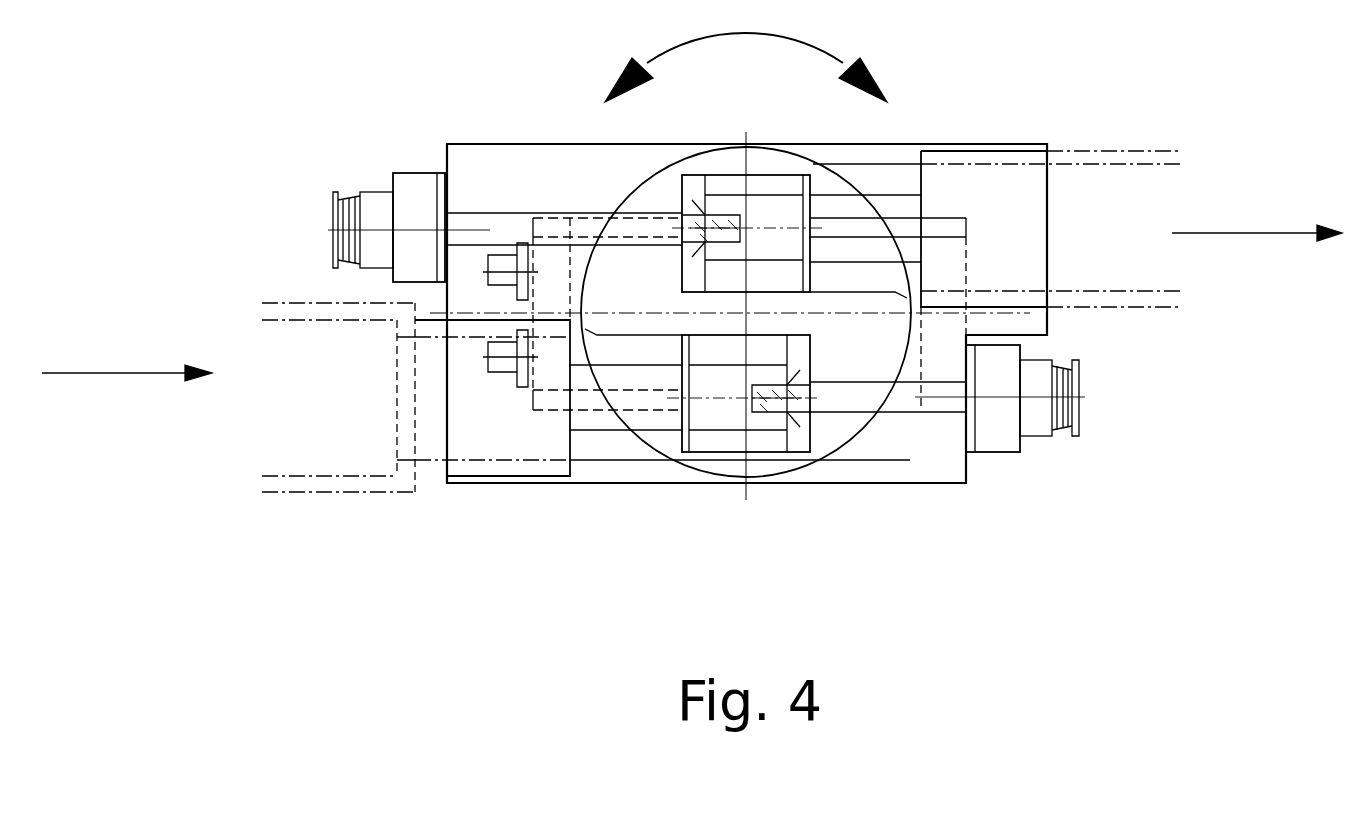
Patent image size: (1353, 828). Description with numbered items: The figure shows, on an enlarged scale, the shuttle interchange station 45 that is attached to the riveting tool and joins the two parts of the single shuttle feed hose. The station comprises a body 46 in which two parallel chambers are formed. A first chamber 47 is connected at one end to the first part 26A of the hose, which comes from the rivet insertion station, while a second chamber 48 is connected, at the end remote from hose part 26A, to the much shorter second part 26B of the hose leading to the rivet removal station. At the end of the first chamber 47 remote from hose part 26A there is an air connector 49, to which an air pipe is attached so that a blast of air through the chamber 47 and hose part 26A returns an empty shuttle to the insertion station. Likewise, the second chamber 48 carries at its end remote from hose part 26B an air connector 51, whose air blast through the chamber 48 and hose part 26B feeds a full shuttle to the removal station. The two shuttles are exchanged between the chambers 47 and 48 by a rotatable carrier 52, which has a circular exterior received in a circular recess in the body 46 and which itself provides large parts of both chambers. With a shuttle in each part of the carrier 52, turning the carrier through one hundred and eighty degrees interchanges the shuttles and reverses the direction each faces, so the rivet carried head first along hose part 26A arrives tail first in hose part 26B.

The first part of the shuttle feed hose 26A is at (327, 492).
The second part of the hose 26B is at (1160, 150).
The interchange station 45 is at (497, 483).
The body 46 is at (927, 486).
The first chamber 47 is at (670, 398).
The second chamber 48 is at (840, 231).
The air connector 49 is at (1080, 370).
The air connector 51 is at (373, 190).
The rotatable carrier 52 is at (678, 163).